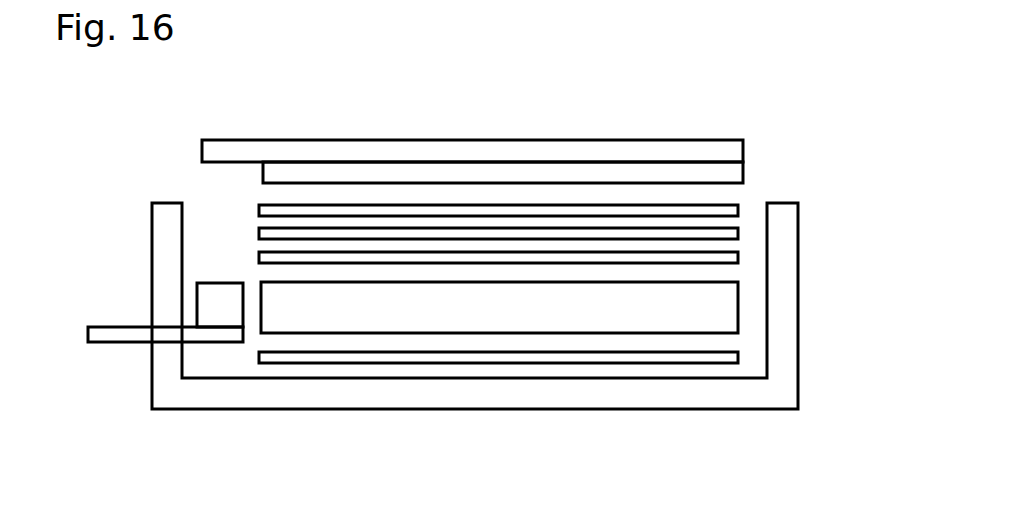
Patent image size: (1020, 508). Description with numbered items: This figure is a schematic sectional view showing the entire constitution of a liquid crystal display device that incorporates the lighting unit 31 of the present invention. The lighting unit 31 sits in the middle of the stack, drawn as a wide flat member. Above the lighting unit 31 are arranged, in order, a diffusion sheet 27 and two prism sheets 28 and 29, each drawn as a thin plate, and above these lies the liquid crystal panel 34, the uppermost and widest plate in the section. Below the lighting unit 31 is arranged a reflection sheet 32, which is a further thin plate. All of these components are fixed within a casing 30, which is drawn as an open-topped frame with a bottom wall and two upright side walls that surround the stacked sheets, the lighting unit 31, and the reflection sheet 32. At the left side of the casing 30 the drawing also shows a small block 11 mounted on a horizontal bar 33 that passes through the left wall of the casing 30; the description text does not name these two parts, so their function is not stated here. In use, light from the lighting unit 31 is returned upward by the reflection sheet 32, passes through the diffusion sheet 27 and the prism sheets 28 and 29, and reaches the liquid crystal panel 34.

The block 11 is at (218, 290).
The diffusion sheet 27 is at (600, 252).
The prism sheet 28 is at (663, 230).
The prism sheet 29 is at (738, 203).
The casing 30 is at (788, 227).
The lighting unit 31 is at (730, 293).
The reflection sheet 32 is at (733, 358).
The bar 33 is at (147, 335).
The liquid crystal panel 34 is at (352, 161).